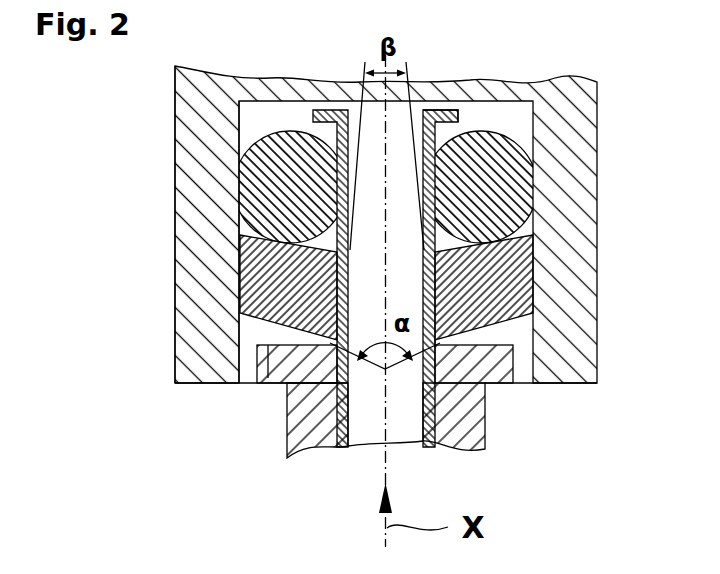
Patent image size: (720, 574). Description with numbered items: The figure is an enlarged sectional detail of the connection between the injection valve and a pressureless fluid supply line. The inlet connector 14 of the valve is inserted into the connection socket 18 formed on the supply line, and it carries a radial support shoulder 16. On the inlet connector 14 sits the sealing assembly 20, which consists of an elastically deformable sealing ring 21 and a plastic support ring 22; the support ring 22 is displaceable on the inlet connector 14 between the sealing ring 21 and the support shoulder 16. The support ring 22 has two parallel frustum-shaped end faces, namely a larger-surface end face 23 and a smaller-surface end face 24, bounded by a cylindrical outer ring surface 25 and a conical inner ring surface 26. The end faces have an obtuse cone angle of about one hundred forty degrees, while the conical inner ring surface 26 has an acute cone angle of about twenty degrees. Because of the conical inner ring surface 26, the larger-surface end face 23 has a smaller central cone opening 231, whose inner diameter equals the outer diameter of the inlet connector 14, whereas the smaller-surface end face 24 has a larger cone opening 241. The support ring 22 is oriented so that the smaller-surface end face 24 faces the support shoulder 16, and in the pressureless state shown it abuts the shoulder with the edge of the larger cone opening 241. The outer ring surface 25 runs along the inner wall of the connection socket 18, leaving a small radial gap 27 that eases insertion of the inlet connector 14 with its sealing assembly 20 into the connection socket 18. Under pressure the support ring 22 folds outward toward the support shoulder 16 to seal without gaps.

The inlet connector 14 is at (285, 428).
The support shoulder 16 is at (240, 384).
The connection socket 18 is at (584, 128).
The sealing assembly 20 is at (222, 246).
The sealing ring 21 is at (240, 173).
The support ring 22 is at (241, 301).
The larger-surface frustum-shaped end face 23 is at (445, 251).
The smaller central cone opening 231 is at (521, 216).
The smaller-surface frustum-shaped end face 24 is at (480, 340).
The larger cone opening 241 is at (285, 384).
The outer ring surface 25 is at (541, 263).
The inner ring surface 26 is at (437, 348).
The radial gap 27 is at (256, 295).